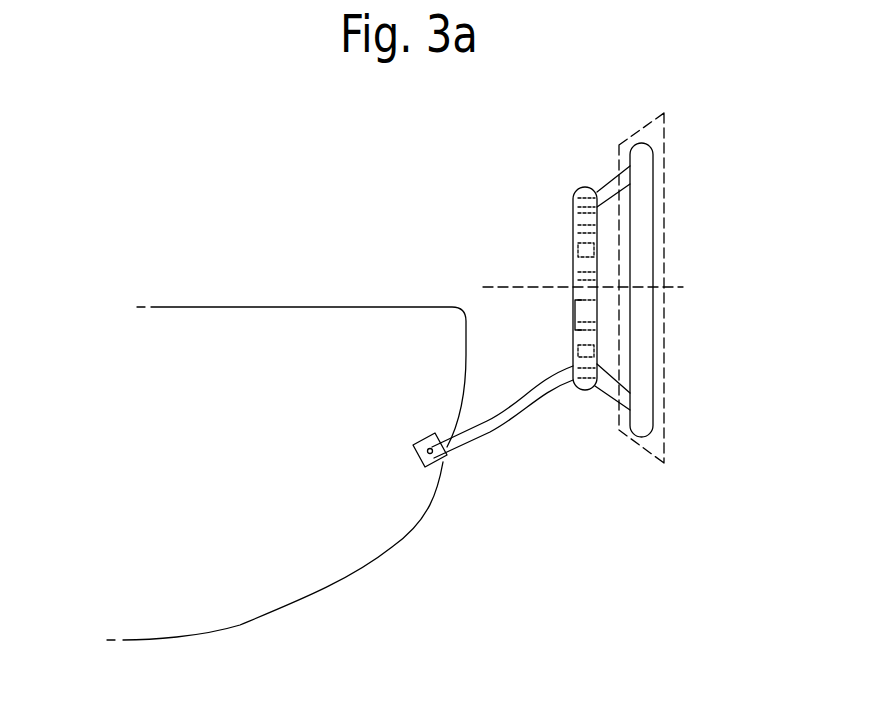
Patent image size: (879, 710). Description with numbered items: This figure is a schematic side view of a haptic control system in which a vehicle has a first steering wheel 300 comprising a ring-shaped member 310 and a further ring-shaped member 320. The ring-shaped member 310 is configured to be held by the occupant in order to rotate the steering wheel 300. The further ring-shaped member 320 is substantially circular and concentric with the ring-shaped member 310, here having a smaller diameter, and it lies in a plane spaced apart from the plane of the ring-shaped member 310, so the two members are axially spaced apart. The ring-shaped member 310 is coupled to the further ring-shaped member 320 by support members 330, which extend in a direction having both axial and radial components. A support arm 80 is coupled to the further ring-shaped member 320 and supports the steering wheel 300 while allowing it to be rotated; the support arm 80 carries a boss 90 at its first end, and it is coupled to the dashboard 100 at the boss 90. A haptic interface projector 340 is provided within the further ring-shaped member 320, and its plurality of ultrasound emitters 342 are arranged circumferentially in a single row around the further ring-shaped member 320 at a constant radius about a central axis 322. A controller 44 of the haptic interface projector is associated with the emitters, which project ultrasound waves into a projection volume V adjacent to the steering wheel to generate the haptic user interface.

The steering wheel 300 is at (581, 140).
The ring-shaped member 310 is at (653, 158).
The further ring-shaped member 320 is at (573, 190).
The central axis 322 is at (672, 286).
The support members 330 is at (607, 183).
The haptic interface projector 340 is at (573, 236).
The ultrasound emitters 342 is at (573, 250).
The controller 44 is at (577, 318).
The support arm 80 is at (484, 424).
The boss 90 is at (422, 458).
The dashboard 100 is at (392, 547).
The projection volume V is at (666, 183).